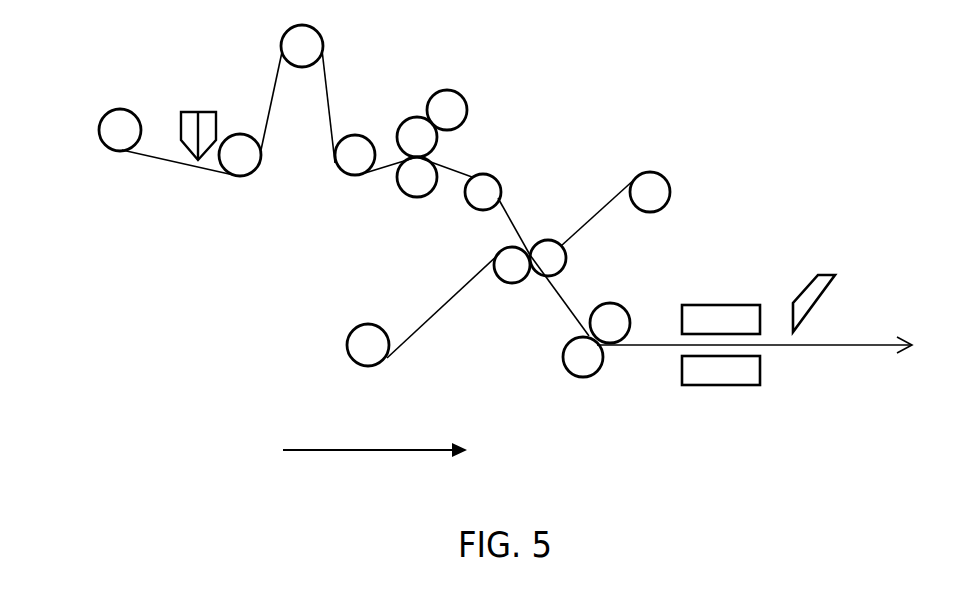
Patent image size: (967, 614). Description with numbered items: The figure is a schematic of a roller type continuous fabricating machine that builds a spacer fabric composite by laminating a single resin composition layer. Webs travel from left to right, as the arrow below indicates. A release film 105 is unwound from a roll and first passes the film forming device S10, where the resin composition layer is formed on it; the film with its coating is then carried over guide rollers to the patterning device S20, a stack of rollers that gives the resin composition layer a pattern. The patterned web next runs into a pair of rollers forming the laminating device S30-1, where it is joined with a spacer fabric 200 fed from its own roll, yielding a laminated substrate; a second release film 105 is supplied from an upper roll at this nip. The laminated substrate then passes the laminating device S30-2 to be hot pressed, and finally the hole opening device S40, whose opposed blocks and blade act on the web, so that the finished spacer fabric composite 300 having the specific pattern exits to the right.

The release film 105 is at (360, 160).
The first process step (coating/application) S10 is at (217, 165).
The patterning device S20 is at (432, 127).
The laminating device S30-1 is at (550, 232).
The laminating device S30-2 is at (586, 362).
The hole opening device S40 is at (758, 326).
The spacer fabric 200 is at (365, 330).
The product output 300 is at (767, 328).